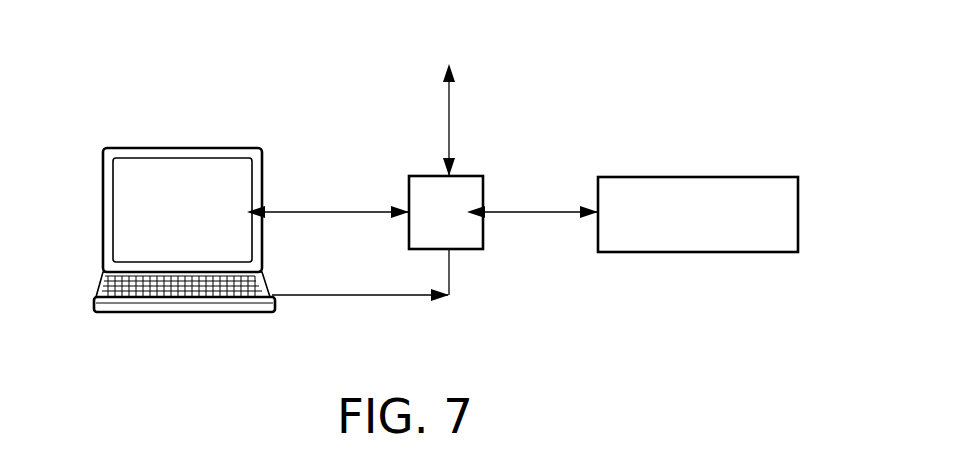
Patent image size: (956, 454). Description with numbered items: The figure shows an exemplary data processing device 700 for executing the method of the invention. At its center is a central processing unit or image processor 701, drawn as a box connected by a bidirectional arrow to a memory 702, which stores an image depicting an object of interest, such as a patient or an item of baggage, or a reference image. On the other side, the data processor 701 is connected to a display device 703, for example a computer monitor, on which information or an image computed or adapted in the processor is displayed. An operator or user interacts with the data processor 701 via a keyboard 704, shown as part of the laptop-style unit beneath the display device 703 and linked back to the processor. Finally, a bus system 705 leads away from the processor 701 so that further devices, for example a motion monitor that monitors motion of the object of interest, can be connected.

The data processing device 700 is at (582, 72).
The central processing unit or image processor 701 is at (478, 176).
The memory 702 is at (668, 177).
The display device 703 is at (183, 148).
The keyboard 704 is at (192, 313).
The bus system 705 is at (447, 128).